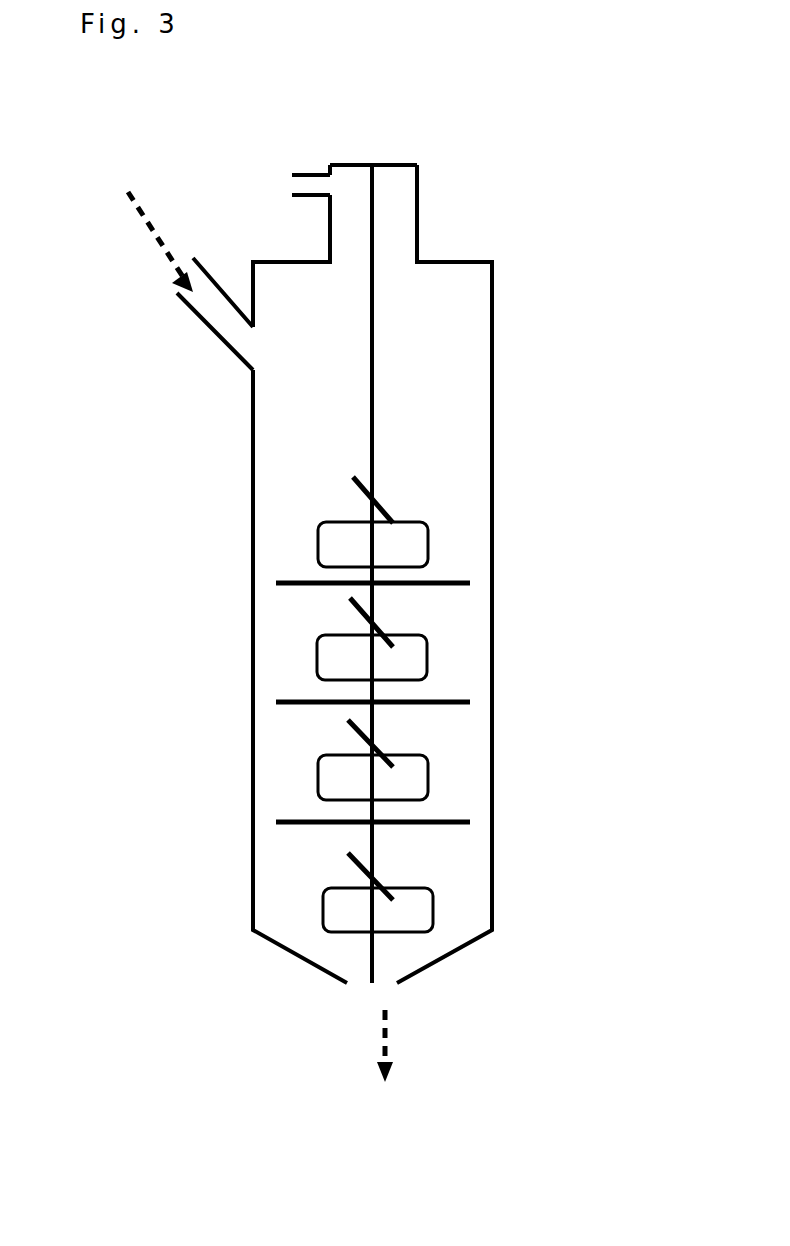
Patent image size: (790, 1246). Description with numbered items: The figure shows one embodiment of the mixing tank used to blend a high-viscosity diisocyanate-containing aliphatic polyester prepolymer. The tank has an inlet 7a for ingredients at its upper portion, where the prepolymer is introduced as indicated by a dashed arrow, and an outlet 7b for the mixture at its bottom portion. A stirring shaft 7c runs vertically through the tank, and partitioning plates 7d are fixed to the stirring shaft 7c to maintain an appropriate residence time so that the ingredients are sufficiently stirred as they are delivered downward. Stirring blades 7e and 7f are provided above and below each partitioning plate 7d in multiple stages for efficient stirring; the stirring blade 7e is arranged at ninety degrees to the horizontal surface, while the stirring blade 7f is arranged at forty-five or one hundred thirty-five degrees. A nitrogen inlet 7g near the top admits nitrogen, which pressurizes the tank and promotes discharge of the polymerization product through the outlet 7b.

The inlet 7a is at (176, 281).
The outlet 7b is at (360, 1009).
The stirring shaft 7c is at (389, 345).
The partitioning plate 7d is at (468, 607).
The stirring blade 7e is at (397, 730).
The stirring blade 7f is at (336, 497).
The nitrogen inlet 7g is at (273, 197).